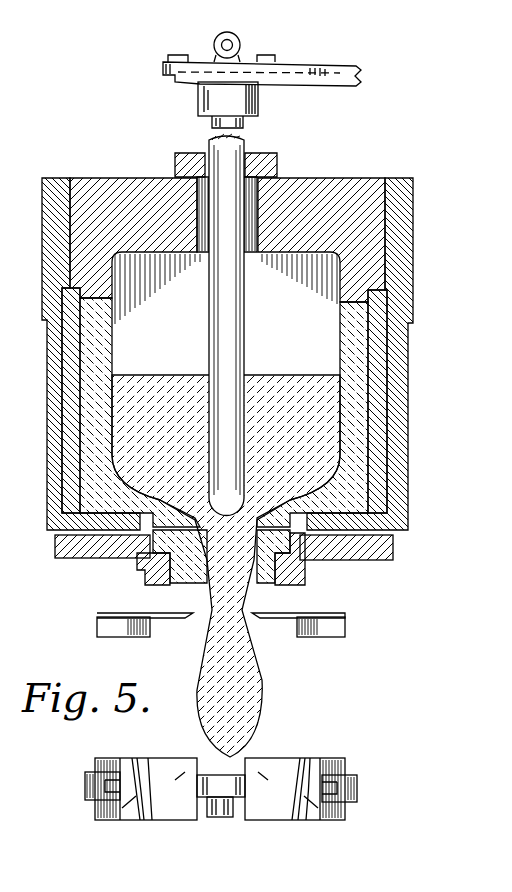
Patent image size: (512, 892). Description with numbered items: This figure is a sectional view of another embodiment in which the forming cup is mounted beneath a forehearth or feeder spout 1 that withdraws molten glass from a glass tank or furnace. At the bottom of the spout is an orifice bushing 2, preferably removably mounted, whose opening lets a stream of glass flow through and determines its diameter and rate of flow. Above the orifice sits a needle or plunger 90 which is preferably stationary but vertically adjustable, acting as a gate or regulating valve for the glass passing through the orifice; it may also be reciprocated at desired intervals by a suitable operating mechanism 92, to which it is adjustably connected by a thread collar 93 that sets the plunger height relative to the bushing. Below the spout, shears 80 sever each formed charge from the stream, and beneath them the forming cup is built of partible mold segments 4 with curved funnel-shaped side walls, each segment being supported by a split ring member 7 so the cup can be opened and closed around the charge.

The forehearth or feeder spout 1 is at (408, 443).
The orifice bushing 2 is at (193, 586).
The partible mold segments 4 is at (127, 758).
The split ring member 7 is at (85, 783).
The shears 80 is at (173, 621).
The needle or plunger 90 is at (222, 316).
The operating mechanism 92 is at (303, 84).
The thread collar 93 is at (260, 105).